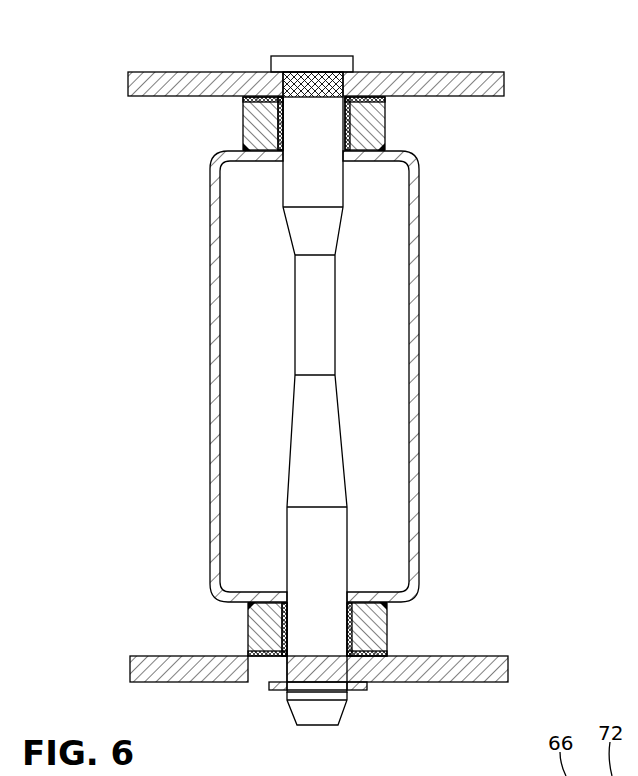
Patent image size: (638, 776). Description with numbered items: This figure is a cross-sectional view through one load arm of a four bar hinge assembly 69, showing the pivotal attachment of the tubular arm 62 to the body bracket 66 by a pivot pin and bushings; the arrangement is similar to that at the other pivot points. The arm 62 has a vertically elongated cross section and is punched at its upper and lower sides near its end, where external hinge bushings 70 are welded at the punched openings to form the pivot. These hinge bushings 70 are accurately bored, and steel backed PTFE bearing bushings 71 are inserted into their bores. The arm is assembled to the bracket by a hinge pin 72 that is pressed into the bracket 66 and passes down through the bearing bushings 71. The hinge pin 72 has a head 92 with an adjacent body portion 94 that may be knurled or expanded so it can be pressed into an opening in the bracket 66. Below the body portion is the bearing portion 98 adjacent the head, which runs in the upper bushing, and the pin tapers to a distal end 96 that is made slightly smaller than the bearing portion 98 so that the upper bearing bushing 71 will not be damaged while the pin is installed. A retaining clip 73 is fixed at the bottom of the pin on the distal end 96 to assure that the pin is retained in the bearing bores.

The tubular arm 62 is at (419, 228).
The body bracket 66 is at (443, 72).
The four bar hinge assembly 69 is at (505, 150).
The external hinge bushing 70 is at (385, 125).
The bearing bushing 71 is at (290, 132).
The hinge pin 72 is at (340, 406).
The retaining clip 73 is at (355, 690).
The head 92 is at (312, 56).
The body portion 94 is at (330, 86).
The distal end 96 is at (300, 667).
The bearing portion 98 is at (333, 187).